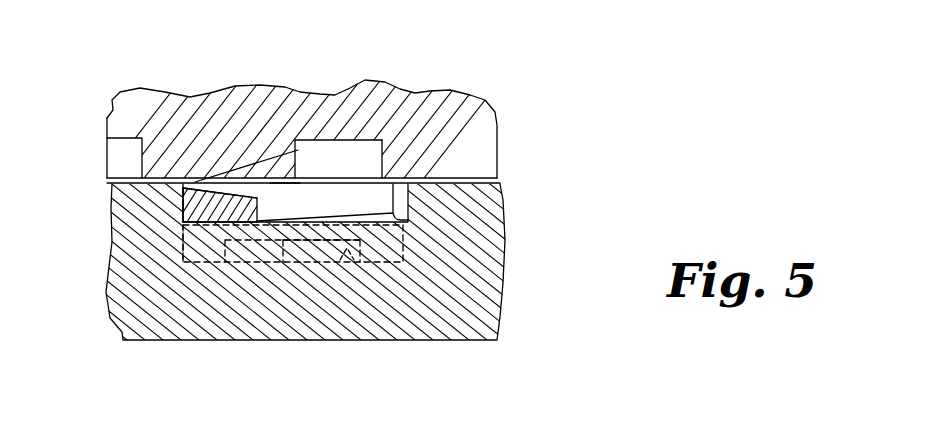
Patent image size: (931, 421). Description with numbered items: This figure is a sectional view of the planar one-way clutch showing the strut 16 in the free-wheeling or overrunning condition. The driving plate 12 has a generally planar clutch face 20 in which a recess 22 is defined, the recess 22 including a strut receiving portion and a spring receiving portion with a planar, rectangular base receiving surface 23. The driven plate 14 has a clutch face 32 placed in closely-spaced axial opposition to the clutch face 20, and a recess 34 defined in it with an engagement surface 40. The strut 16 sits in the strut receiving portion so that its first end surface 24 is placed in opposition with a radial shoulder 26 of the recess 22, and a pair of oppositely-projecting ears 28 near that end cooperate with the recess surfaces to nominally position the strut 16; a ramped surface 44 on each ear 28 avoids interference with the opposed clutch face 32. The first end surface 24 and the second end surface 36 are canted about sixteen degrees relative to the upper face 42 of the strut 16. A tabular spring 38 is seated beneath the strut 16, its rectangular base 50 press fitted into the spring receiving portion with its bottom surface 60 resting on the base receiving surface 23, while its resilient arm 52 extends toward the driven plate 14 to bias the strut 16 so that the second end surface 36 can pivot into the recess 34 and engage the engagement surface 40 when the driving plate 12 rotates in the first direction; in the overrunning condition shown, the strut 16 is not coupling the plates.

The driving plate 12 is at (505, 284).
The driven plate 14 is at (490, 103).
The strut 16 is at (298, 145).
The clutch face 20 is at (455, 178).
The recess 22 is at (505, 240).
The base receiving surface 23 is at (355, 263).
The first end surface 24 is at (183, 213).
The radial shoulder 26 is at (186, 189).
The ears 28 is at (212, 200).
The clutch face 32 is at (112, 183).
The recess 34 is at (344, 140).
The second end surface 36 is at (409, 219).
The tabular spring 38 is at (173, 253).
The engagement surface 40 is at (379, 162).
The upper face 42 is at (287, 170).
The ramped surface 44 is at (215, 186).
The base 50 is at (243, 265).
The arm 52 is at (282, 265).
The bottom surface 60 is at (200, 263).